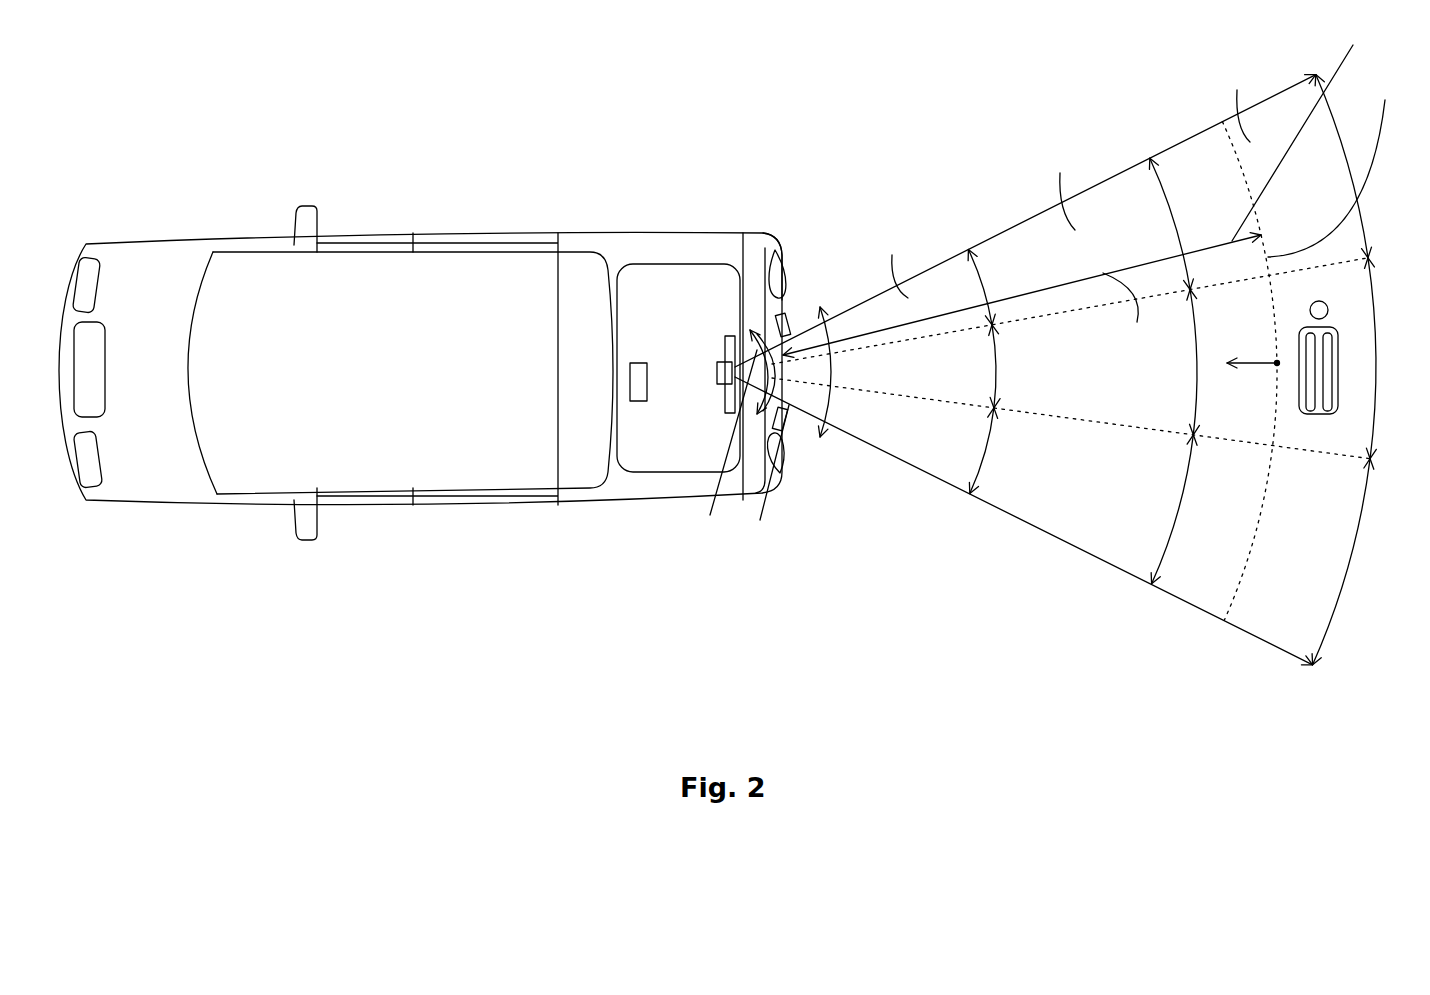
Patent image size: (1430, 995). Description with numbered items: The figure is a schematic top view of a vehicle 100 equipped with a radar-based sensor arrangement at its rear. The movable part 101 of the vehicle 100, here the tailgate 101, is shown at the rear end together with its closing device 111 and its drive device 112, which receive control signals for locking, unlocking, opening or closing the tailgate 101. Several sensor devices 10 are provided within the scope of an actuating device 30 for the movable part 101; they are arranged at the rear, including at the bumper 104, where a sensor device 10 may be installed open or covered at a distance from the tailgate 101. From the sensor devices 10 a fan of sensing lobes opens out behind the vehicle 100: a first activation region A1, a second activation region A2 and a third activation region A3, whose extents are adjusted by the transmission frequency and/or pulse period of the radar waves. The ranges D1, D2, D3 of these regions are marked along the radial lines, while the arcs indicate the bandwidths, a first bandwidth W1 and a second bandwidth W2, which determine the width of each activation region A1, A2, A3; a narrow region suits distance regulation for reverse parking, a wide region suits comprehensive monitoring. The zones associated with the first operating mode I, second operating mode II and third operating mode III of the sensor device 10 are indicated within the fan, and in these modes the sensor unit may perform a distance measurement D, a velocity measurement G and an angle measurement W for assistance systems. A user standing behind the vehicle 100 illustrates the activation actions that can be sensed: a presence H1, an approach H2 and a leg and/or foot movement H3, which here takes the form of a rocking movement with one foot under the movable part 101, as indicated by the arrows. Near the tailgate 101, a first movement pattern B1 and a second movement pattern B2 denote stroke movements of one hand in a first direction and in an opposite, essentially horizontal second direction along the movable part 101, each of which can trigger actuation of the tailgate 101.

The vehicle 100 is at (170, 258).
The movable part (tailgate) 101 is at (683, 290).
The bumper 104 is at (775, 246).
The closing device 111 is at (717, 373).
The drive device 112 is at (640, 367).
The sensor device 10 is at (733, 350).
The actuating device 30 is at (730, 348).
The first activation region A1 is at (1238, 98).
The second activation region A2 is at (1058, 186).
The third activation region A3 is at (893, 260).
The first movement pattern B1 is at (722, 450).
The second movement pattern B2 is at (782, 478).
The distance measurement D is at (1300, 126).
The velocity measurement G is at (1338, 147).
The angle measurement W is at (1124, 314).
The first bandwidth W1 is at (1189, 531).
The second bandwidth W2 is at (1216, 354).
The range of activation region D1 is at (962, 372).
The range of activation region D2 is at (1108, 371).
The range of activation region D3 is at (1285, 370).
The presence H1 is at (1278, 364).
The approach H2 is at (1249, 365).
The leg and/or foot movement H3 is at (829, 366).
The first operating mode I is at (1283, 156).
The second operating mode II is at (1141, 224).
The third operating mode III is at (968, 304).